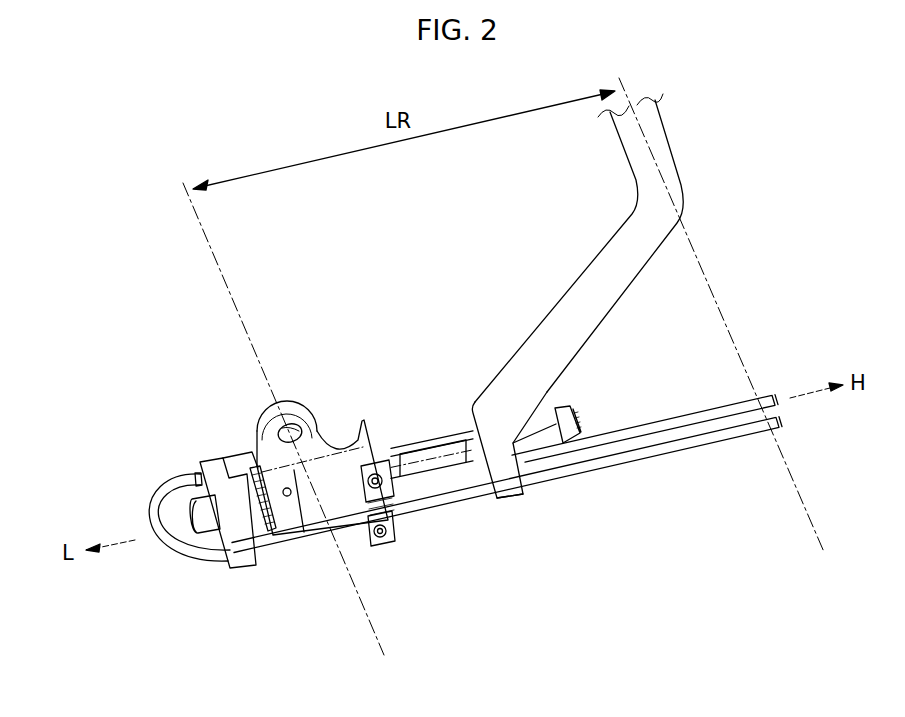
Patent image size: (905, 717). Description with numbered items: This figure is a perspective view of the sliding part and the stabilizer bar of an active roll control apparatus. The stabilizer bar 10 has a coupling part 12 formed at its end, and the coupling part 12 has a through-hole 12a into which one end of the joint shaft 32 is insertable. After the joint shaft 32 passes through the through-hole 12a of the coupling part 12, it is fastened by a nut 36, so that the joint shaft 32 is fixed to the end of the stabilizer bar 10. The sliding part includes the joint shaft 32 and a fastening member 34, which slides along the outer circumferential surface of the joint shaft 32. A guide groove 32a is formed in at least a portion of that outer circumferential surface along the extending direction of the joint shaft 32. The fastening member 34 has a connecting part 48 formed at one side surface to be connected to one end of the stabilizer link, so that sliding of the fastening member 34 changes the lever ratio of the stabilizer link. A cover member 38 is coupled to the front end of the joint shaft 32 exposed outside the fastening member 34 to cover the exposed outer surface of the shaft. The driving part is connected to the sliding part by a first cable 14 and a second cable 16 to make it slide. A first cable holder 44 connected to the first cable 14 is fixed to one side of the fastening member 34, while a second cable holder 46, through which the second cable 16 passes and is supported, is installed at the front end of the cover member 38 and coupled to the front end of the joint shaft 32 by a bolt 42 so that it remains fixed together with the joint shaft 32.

The stabilizer bar 10 is at (678, 180).
The coupling part 12 is at (528, 412).
The through-hole 12a is at (474, 500).
The first cable 14 is at (688, 417).
The second cable 16 is at (648, 464).
The joint shaft 32 is at (478, 433).
The guide groove 32a is at (413, 442).
The fastening member 34 is at (337, 432).
The nut 36 is at (573, 410).
The cover member 38 is at (240, 483).
The bolt 42 is at (188, 517).
The first cable holder 44 is at (388, 512).
The second cable holder 46 is at (240, 566).
The connecting part 48 is at (287, 401).